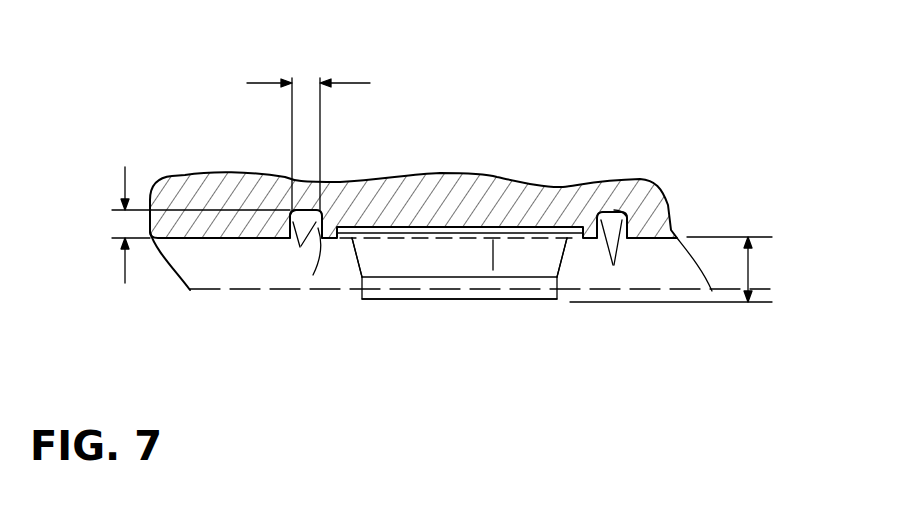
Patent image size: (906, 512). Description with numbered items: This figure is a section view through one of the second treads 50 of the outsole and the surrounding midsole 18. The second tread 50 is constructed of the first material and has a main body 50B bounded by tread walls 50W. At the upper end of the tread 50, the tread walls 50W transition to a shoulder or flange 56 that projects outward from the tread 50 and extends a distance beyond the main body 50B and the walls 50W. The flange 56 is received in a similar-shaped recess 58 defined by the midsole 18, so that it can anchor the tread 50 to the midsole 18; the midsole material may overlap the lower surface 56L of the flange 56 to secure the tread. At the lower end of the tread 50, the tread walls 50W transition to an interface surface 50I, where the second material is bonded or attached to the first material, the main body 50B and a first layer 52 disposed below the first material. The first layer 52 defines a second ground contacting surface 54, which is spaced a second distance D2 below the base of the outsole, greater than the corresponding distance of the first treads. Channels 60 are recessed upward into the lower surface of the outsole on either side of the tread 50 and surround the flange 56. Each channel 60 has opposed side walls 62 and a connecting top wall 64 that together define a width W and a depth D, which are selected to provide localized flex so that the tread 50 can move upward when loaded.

The midsole 18 is at (393, 213).
The second tread 50 is at (458, 248).
The main body 50B is at (440, 257).
The interface surface 50I is at (493, 240).
The tread walls 50W is at (337, 240).
The first layer 52 is at (417, 295).
The second ground contacting surface 54 is at (472, 300).
The flange 56 is at (445, 250).
The lower surface of the flange 56L is at (313, 275).
The recess 58 is at (460, 222).
The channel 60 is at (300, 196).
The side walls 62 is at (300, 247).
The top wall 64 is at (290, 208).
The width W is at (280, 82).
The depth D is at (125, 186).
The second distance D2 is at (750, 270).